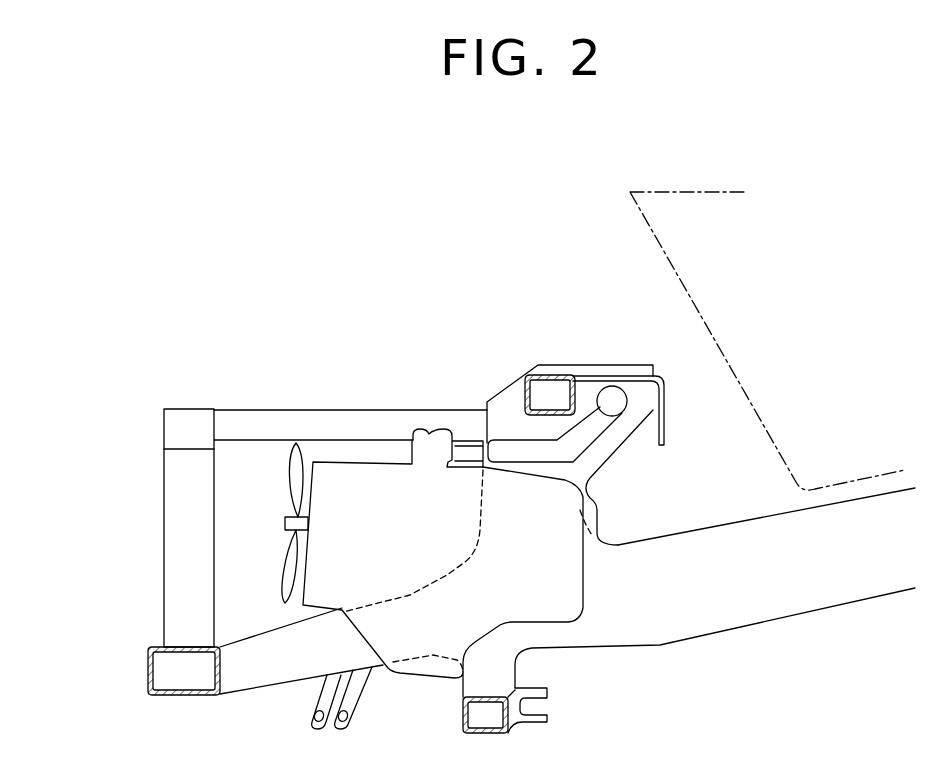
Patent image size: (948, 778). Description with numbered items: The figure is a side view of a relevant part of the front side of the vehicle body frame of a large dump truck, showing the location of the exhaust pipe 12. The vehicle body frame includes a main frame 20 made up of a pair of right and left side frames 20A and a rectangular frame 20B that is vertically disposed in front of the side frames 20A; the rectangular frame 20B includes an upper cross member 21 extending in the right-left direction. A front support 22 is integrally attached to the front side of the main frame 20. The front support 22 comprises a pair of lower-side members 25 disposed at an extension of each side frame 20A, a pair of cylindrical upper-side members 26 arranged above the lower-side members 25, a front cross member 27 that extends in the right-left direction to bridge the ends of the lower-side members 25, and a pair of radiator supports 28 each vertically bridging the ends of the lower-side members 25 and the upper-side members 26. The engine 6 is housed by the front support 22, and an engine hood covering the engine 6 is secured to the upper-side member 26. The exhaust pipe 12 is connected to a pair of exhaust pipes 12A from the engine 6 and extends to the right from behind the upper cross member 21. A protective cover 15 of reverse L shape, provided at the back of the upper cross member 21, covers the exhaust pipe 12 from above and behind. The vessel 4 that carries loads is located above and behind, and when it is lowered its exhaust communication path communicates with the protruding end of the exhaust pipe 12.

The vessel 4 is at (672, 197).
The engine 6 is at (343, 472).
The exhaust pipe 12 is at (627, 393).
The exhaust pipes 12A is at (580, 450).
The protective cover 15 is at (663, 393).
The main frame 20 is at (870, 633).
The side frames 20A is at (757, 610).
The rectangular frame 20B is at (508, 413).
The upper cross member 21 is at (548, 377).
The front support 22 is at (133, 581).
The lower-side members 25 is at (258, 678).
The upper-side members 26 is at (423, 420).
The front cross member 27 is at (158, 673).
The radiator supports 28 is at (173, 485).